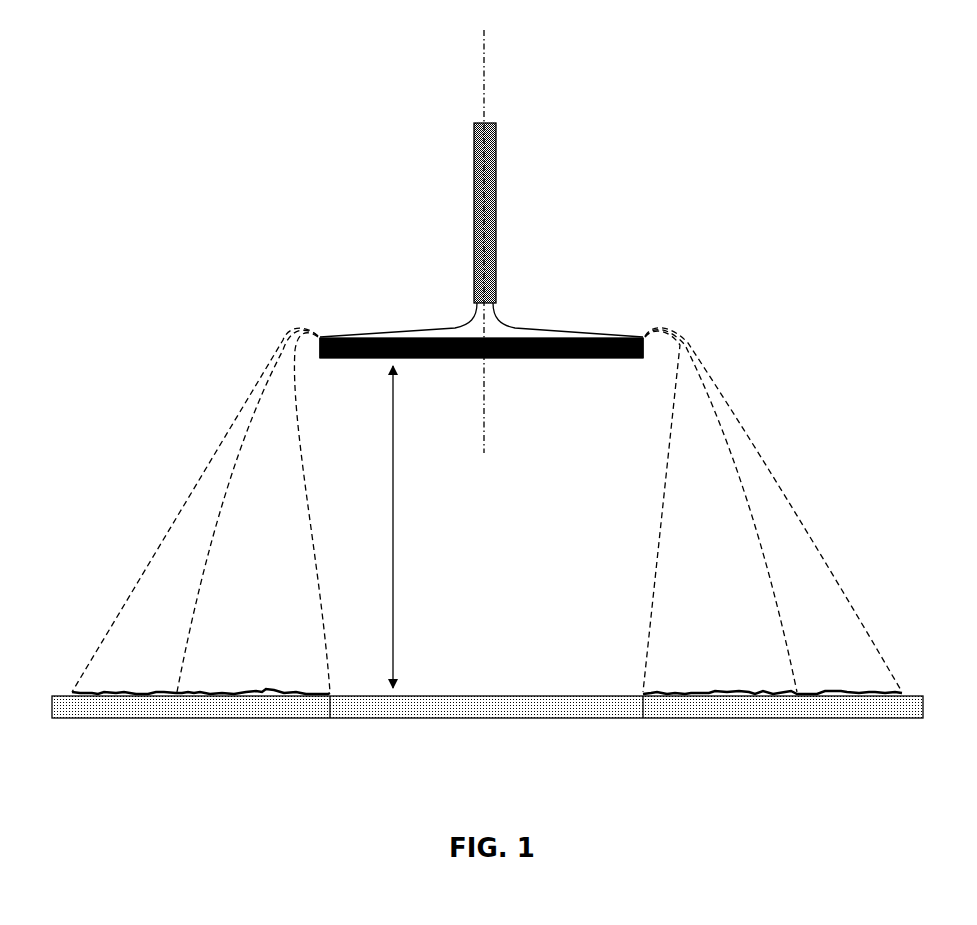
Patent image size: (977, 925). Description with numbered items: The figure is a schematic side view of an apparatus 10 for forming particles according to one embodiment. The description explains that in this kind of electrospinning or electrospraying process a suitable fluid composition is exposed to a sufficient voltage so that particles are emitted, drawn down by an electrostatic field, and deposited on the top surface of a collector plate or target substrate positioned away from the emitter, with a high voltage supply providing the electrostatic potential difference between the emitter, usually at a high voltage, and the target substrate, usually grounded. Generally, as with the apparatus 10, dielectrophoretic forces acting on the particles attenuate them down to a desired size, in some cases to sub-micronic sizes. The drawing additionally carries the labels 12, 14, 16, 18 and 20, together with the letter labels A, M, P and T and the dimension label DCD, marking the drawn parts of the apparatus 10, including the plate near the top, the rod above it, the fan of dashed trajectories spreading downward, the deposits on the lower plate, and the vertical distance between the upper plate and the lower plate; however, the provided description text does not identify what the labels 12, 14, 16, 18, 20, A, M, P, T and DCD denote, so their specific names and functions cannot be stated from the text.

The apparatus 10 is at (720, 84).
The plate / target 12 is at (580, 337).
The melt impingement point 14 is at (462, 332).
The feedstock rod 16 is at (495, 148).
The plate edges 18 is at (322, 359).
The substrate 20 is at (527, 697).
The rotation axis A is at (484, 80).
The melt M is at (512, 323).
The spray of particles P is at (683, 450).
The deposited coating T is at (843, 690).
The deposition distance DCD is at (393, 548).